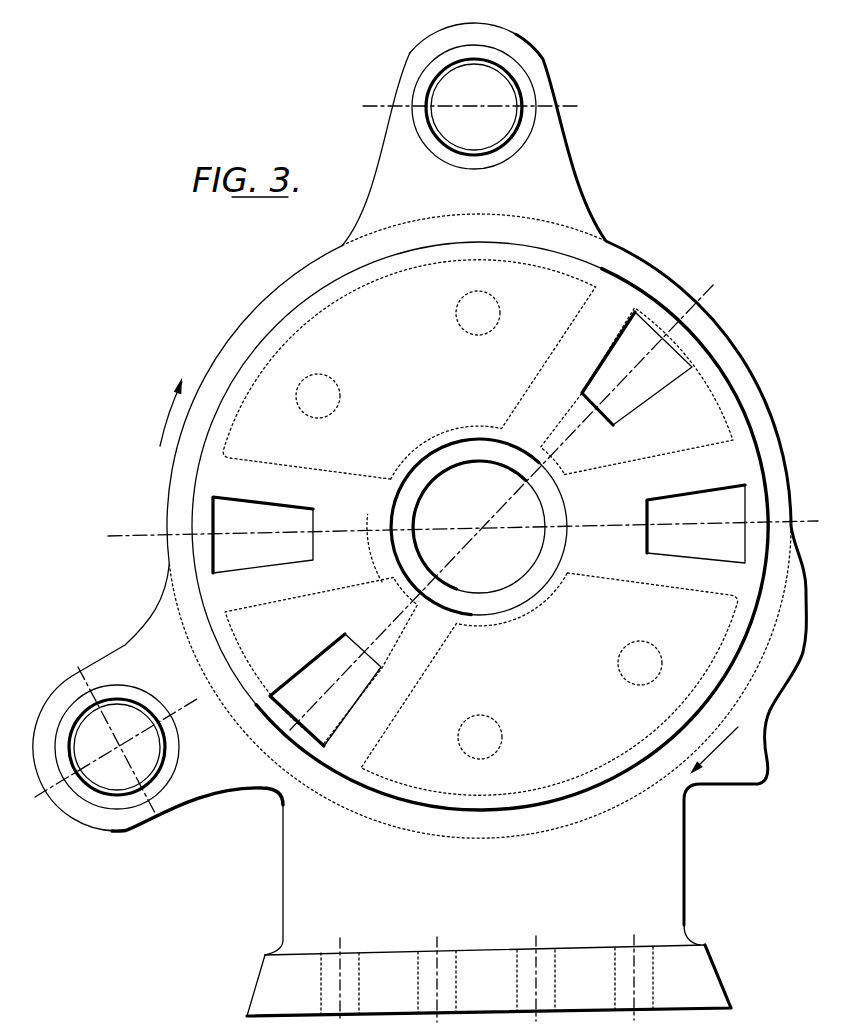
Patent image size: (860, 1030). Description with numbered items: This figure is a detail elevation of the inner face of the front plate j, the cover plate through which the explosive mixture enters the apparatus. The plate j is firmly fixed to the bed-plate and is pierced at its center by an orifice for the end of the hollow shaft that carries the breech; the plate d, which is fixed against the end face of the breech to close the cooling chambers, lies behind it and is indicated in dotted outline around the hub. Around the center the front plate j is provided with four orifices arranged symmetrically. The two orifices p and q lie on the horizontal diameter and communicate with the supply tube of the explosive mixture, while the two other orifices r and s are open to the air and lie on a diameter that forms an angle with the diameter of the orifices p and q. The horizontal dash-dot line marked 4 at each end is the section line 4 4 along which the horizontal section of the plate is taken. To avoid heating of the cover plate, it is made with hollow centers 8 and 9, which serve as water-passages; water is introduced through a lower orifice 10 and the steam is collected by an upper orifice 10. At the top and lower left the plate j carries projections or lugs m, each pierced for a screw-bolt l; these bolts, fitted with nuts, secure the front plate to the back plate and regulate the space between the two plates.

The lug m is at (409, 63).
The screw-bolt l is at (500, 84).
The front plate j is at (766, 393).
The section line 4 4 is at (463, 524).
The hollow center 8 is at (409, 369).
The hollow center 9 is at (549, 684).
The orifice 10 is at (331, 380).
The orifice p is at (263, 535).
The orifice q is at (696, 524).
The orifice r is at (325, 690).
The orifice s is at (637, 368).
The plate d is at (374, 553).